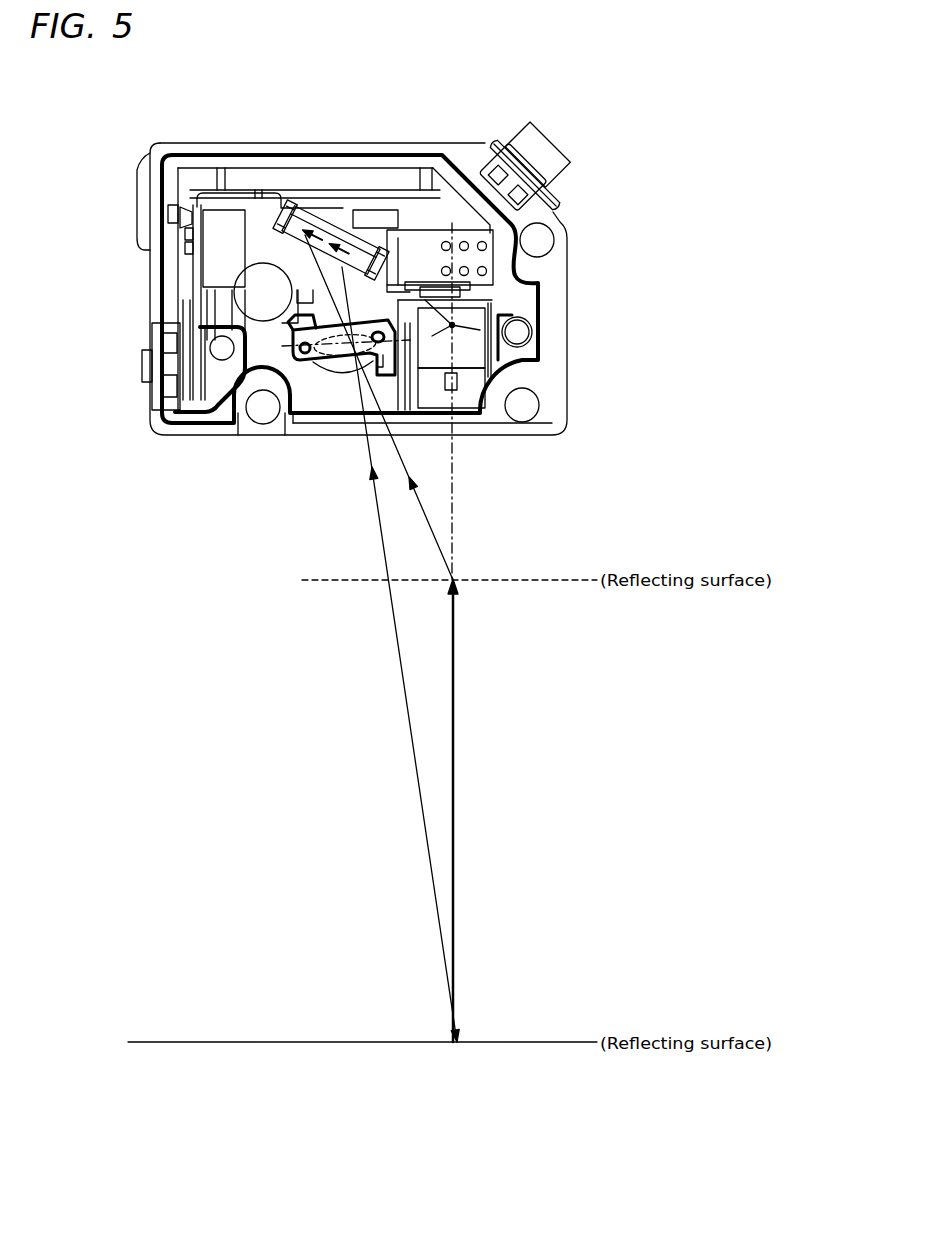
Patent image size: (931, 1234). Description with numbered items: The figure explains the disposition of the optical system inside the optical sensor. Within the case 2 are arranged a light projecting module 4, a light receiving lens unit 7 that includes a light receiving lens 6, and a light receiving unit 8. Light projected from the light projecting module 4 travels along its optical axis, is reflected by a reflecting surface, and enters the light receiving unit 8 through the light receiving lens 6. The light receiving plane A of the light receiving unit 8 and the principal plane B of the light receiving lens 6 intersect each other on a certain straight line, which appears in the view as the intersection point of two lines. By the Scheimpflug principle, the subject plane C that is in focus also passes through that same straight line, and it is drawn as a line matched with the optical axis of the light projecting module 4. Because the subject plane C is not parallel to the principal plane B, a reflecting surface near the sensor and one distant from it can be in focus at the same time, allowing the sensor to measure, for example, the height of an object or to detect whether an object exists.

The case 2 is at (562, 293).
The light projecting module 4 is at (480, 332).
The light receiving lens 6 is at (340, 353).
The light receiving lens unit 7 is at (313, 358).
The light receiving unit 8 is at (302, 212).
The light receiving plane A is at (452, 325).
The principal plane B is at (289, 346).
The subject plane C is at (456, 495).